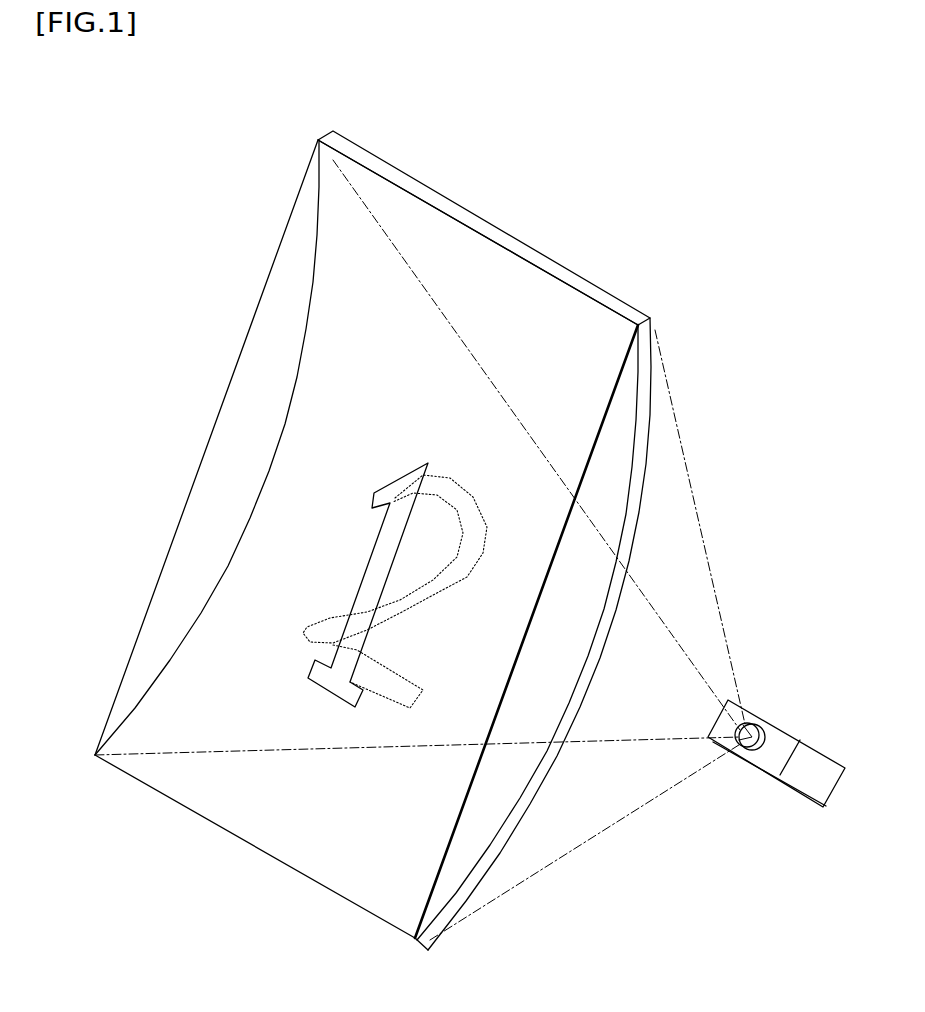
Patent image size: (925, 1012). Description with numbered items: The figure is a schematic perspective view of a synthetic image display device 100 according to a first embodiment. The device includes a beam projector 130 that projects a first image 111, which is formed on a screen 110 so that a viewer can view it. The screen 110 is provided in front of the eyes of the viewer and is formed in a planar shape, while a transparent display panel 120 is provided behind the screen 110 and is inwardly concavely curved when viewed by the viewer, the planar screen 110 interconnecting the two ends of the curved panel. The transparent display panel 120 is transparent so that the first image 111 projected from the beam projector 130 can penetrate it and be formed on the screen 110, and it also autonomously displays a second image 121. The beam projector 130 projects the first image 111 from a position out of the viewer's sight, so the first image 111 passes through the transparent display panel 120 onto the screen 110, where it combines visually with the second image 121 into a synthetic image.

The synthetic image display device 100 is at (213, 173).
The screen 110 is at (160, 574).
The first image 111 is at (361, 586).
The transparent display panel 120 is at (553, 755).
The second image 121 is at (437, 593).
The beam projector 130 is at (783, 742).